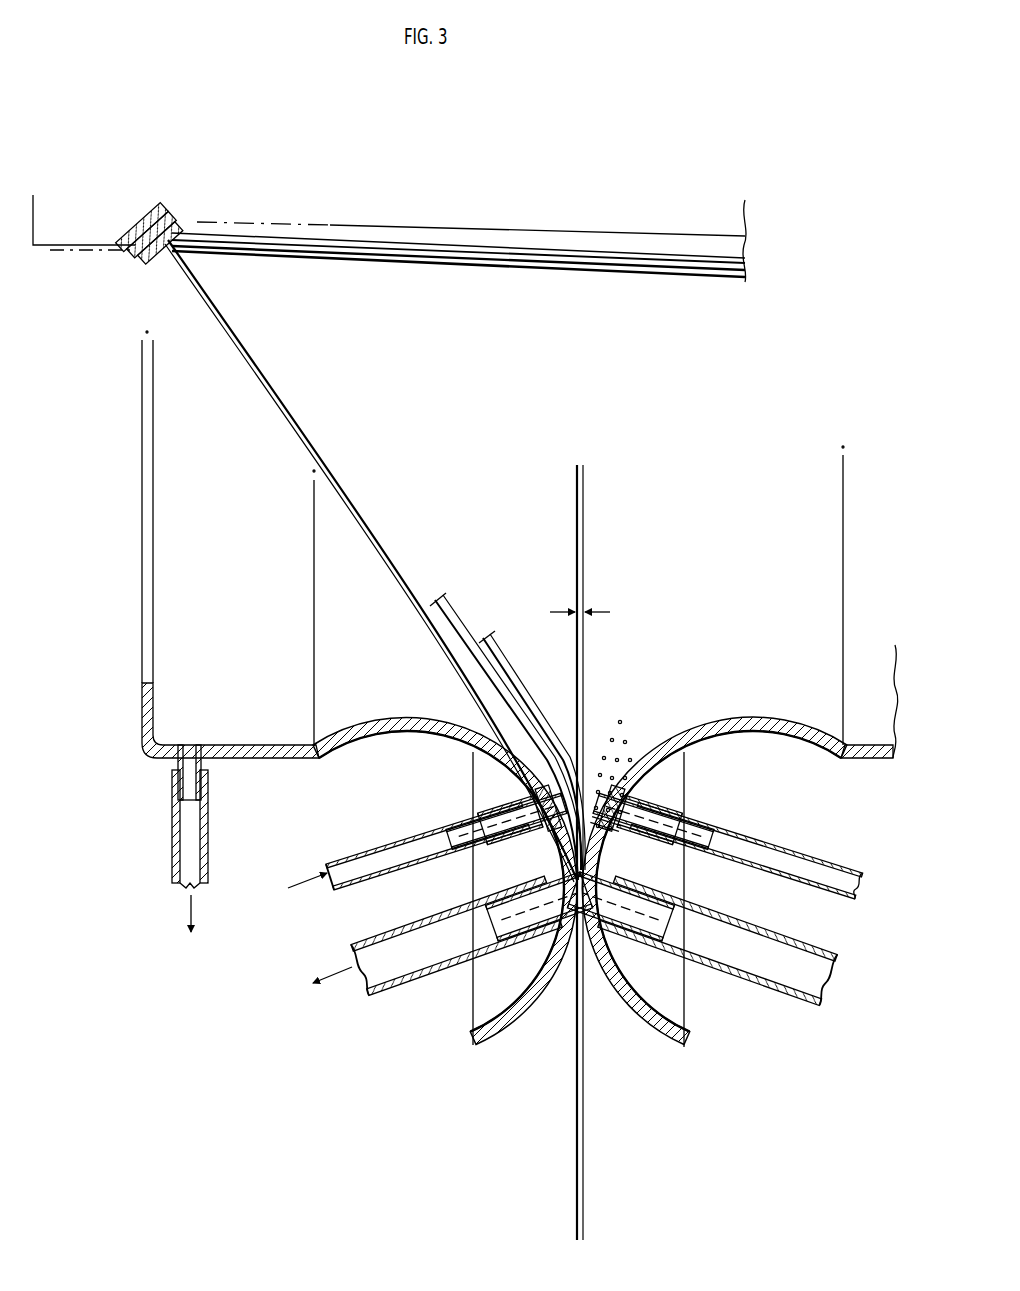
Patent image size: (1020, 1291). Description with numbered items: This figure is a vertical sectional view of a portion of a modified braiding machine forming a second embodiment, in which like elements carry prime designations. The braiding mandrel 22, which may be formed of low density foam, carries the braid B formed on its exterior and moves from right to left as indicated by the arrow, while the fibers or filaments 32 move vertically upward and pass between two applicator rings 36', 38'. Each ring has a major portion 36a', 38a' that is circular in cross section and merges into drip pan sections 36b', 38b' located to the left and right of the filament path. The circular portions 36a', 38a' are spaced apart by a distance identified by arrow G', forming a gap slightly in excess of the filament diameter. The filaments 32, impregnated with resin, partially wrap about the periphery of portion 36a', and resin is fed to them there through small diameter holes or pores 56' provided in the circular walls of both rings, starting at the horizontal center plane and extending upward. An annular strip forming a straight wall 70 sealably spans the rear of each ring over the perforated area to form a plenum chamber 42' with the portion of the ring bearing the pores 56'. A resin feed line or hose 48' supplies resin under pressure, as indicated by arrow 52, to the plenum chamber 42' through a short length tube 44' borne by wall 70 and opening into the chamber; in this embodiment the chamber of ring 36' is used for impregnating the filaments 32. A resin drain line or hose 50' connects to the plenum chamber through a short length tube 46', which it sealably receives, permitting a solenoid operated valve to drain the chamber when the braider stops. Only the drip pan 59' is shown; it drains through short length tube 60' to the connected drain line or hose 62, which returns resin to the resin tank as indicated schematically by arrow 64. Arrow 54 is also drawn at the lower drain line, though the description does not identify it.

The braiding mandrel 22 is at (478, 240).
The braid B is at (164, 221).
The filaments 32 is at (425, 600).
The gap G' is at (592, 602).
The drip pan 59' is at (520, 544).
The applicator ring 36' is at (445, 859).
The circular cross section portion 36a' is at (441, 881).
The drip pan section 36b' is at (230, 720).
The applicator ring 38' is at (714, 860).
The circular cross section portion 38a' is at (720, 881).
The drip pan section 38b' is at (868, 724).
The short length tube 60' is at (188, 744).
The drain line 62 is at (172, 862).
The arrow 64 is at (193, 918).
The resin feed line 48' is at (588, 850).
The plenum chamber 42' is at (588, 842).
The short length tube 44' is at (604, 815).
The straight wall 70 is at (540, 850).
The resin drain line 50' is at (594, 958).
The short length tube 46' is at (580, 933).
The holes or pores 56' is at (659, 854).
The arrow 52 is at (306, 888).
The lower flow arrow 54 is at (324, 985).